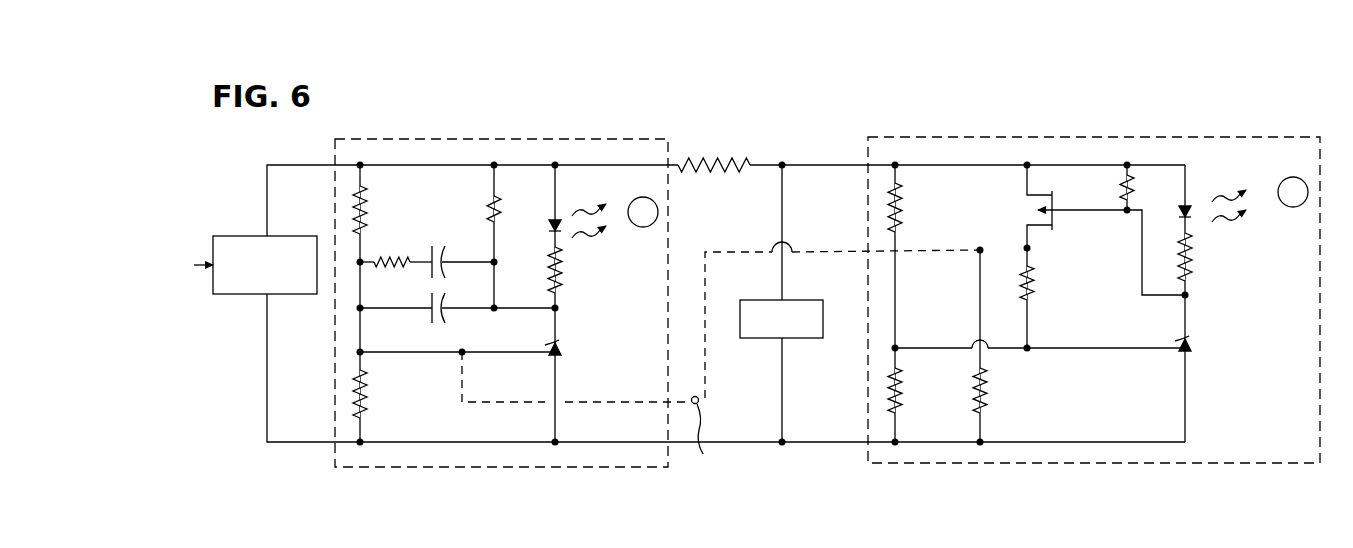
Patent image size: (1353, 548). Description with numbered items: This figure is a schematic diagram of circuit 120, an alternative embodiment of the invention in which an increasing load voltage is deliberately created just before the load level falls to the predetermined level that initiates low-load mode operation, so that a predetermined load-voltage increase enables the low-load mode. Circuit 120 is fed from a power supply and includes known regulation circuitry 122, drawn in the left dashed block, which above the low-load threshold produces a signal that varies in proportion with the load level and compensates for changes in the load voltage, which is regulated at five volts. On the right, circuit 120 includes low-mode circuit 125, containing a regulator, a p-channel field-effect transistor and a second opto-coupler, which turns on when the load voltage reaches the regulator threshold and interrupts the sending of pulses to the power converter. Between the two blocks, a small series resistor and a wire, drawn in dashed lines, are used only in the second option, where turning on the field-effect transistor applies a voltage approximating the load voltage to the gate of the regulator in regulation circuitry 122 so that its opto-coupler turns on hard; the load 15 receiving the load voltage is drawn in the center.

The circuit 120 is at (712, 80).
The regulation circuitry 122 is at (508, 138).
The low-mode circuit 125 is at (1107, 133).
The load 15 is at (763, 339).